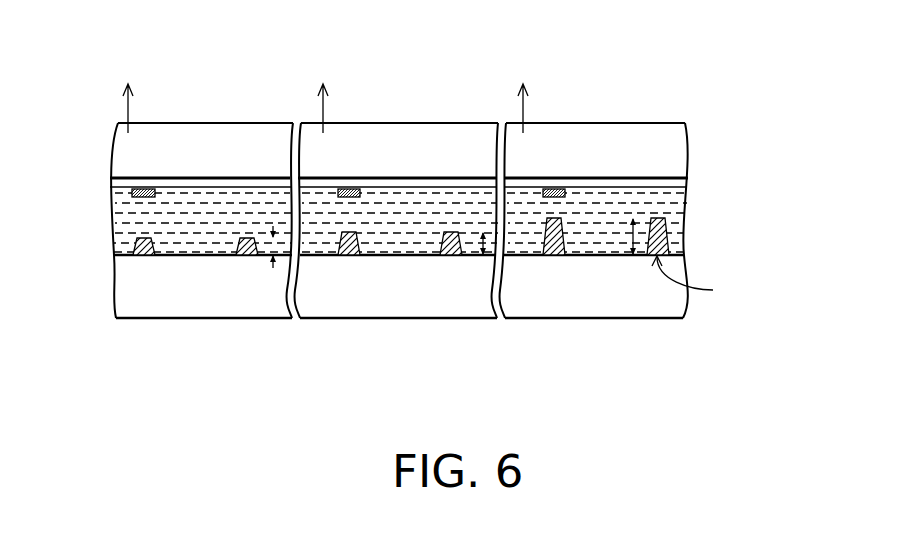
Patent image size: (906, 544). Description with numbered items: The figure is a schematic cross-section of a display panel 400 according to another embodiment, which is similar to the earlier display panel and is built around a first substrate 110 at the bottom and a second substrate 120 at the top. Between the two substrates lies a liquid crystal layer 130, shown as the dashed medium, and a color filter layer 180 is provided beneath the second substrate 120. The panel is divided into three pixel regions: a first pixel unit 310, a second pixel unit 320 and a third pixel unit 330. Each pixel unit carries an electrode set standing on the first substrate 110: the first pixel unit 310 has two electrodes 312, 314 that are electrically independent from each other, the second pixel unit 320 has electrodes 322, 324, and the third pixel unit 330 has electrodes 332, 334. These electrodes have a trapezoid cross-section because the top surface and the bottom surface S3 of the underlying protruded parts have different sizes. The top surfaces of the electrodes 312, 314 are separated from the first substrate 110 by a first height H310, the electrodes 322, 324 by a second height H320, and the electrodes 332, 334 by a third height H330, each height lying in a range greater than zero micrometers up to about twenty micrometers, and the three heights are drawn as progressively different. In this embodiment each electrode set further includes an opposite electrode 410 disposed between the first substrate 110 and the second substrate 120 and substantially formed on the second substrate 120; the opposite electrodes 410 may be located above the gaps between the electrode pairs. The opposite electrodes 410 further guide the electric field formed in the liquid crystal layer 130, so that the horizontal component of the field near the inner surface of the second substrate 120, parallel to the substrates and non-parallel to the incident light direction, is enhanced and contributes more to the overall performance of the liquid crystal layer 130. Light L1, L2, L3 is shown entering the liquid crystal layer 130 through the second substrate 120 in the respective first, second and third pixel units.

The display panel 400 is at (792, 414).
The first substrate 110 is at (658, 305).
The second substrate 120 is at (665, 149).
The liquid crystal layer 130 is at (680, 208).
The color filter layer 180 is at (110, 188).
The opposite electrode 410 is at (143, 196).
The first pixel unit 310 is at (682, 80).
The electrode 312 is at (565, 218).
The electrode 314 is at (647, 218).
The second pixel unit 320 is at (480, 80).
The electrode 322 is at (362, 232).
The electrode 324 is at (448, 232).
The third pixel unit 330 is at (245, 80).
The electrode 332 is at (147, 238).
The electrode 334 is at (243, 238).
The first height H310 is at (620, 256).
The second height H320 is at (487, 243).
The third height H330 is at (280, 247).
The bottom surface S3 is at (697, 280).
The light L1 is at (519, 104).
The light L2 is at (318, 104).
The light L3 is at (123, 104).